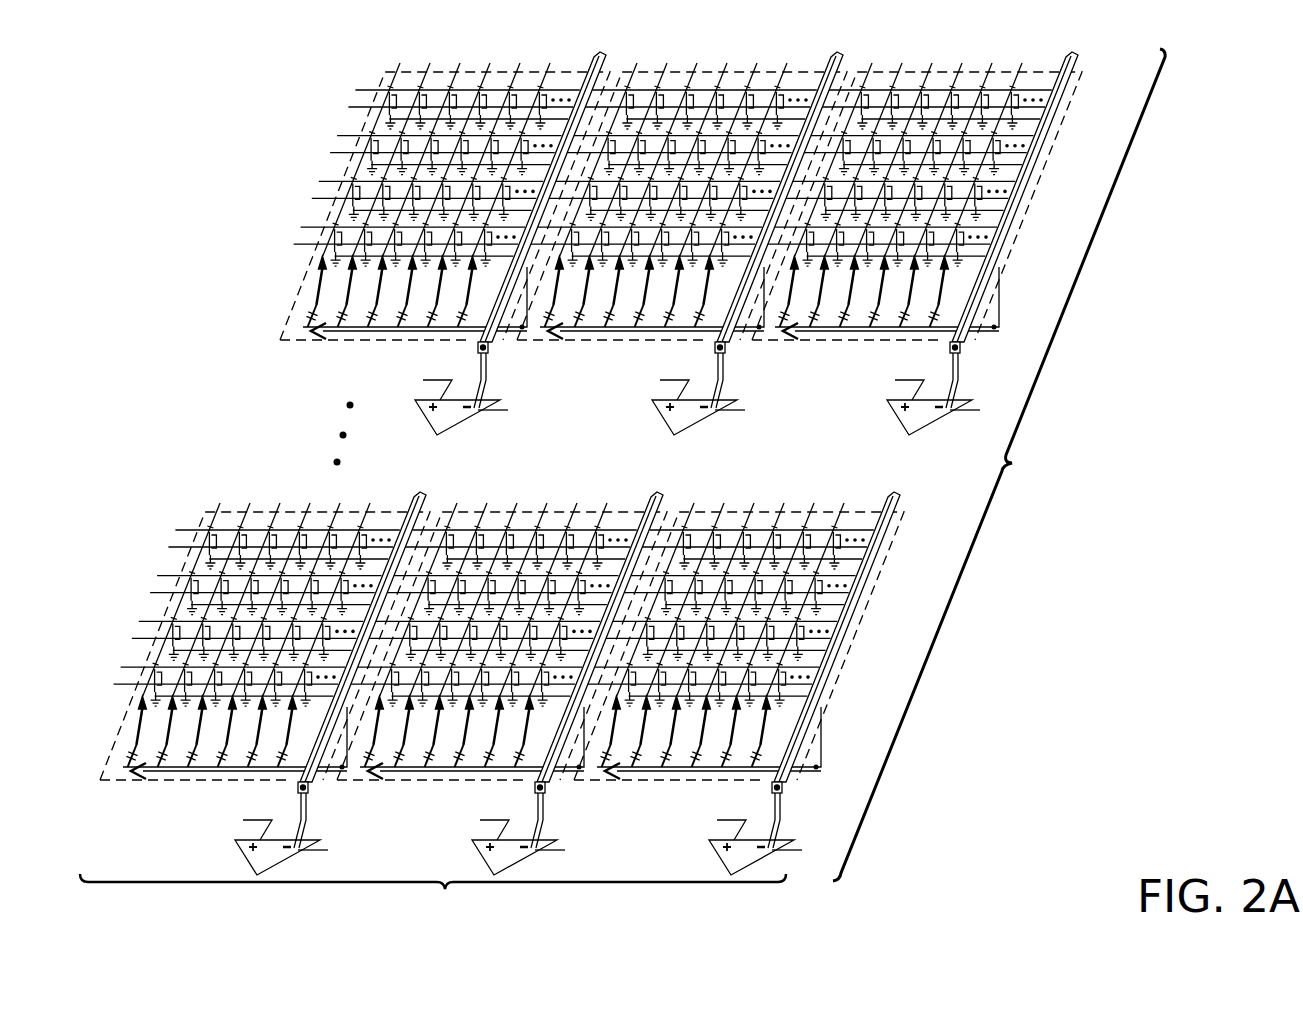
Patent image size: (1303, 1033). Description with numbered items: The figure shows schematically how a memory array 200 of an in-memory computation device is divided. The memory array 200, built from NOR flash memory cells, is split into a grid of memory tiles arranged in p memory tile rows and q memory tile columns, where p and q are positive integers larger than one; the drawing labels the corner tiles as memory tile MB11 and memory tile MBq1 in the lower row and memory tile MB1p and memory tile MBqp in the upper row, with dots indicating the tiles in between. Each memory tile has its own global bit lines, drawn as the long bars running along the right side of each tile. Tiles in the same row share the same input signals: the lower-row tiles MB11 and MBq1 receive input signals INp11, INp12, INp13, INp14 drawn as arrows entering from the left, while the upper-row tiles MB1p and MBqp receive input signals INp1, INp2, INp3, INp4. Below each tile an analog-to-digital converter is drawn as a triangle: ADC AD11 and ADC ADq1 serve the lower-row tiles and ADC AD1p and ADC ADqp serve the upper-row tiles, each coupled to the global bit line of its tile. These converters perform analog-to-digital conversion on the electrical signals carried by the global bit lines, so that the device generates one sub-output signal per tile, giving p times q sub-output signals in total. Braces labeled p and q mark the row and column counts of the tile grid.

The memory array 200 is at (1070, 849).
The memory tile MB1p is at (305, 342).
The memory tile MBqp is at (815, 340).
The memory tile MB11 is at (125, 782).
The memory tile MBq1 is at (638, 782).
The ADC AD1p is at (462, 421).
The ADC ADqp is at (933, 422).
The ADC AD11 is at (261, 855).
The ADC ADq1 is at (731, 852).
The input signal INp1 is at (604, 243).
The input signal INp2 is at (622, 197).
The input signal INp3 is at (640, 152).
The input signal INp4 is at (658, 106).
The input line INp11 is at (422, 683).
The input line INp12 is at (436, 637).
The input line INp13 is at (455, 592).
The input line INp14 is at (473, 546).
The number of memory tile rows p is at (999, 465).
The number of memory tile columns q is at (433, 897).